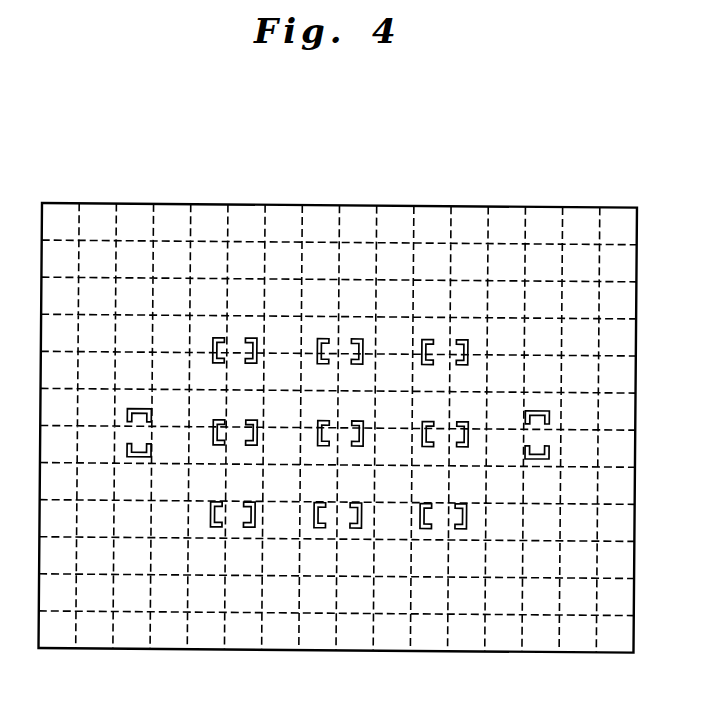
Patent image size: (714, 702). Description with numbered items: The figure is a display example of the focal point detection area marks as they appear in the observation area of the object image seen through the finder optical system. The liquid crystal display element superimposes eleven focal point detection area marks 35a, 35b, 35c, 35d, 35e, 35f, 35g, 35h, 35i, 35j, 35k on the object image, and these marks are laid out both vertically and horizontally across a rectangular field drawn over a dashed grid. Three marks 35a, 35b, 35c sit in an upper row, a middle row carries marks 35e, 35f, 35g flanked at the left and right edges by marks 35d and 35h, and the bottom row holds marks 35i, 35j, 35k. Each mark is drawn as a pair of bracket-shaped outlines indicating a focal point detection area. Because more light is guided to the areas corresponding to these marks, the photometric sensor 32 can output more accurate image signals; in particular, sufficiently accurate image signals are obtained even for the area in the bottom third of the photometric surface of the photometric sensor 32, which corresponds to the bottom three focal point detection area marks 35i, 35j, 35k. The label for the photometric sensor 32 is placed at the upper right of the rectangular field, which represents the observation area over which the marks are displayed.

The photometric sensor 32 is at (551, 203).
The focal point detection area mark 35a is at (247, 336).
The focal point detection area mark 35b is at (353, 336).
The focal point detection area mark 35c is at (458, 336).
The focal point detection area mark 35d is at (131, 408).
The focal point detection area mark 35e is at (252, 418).
The focal point detection area mark 35f is at (357, 418).
The focal point detection area mark 35g is at (462, 417).
The focal point detection area mark 35h is at (546, 407).
The focal point detection area mark 35i is at (256, 526).
The focal point detection area mark 35j is at (360, 526).
The focal point detection area mark 35k is at (466, 526).